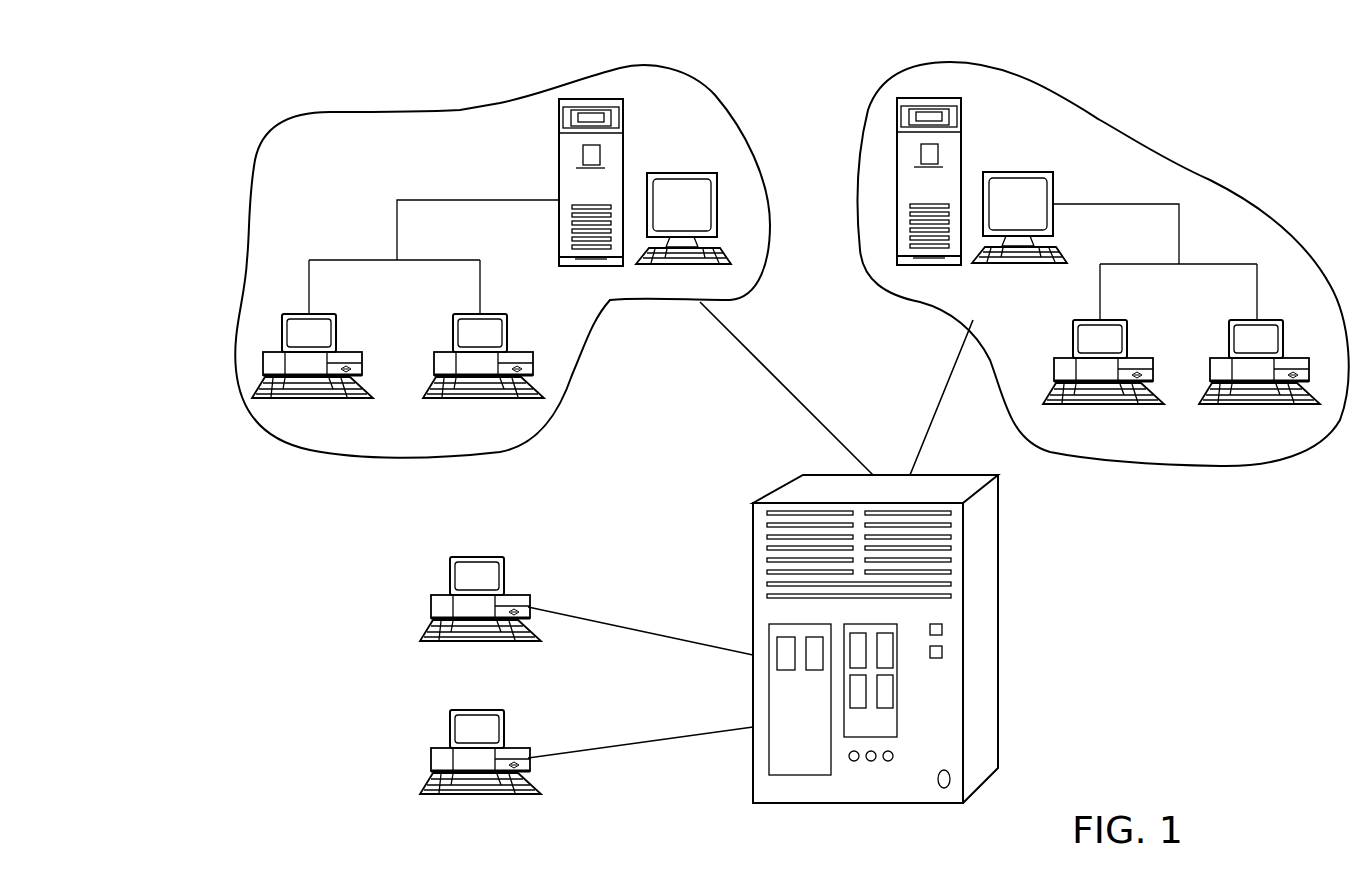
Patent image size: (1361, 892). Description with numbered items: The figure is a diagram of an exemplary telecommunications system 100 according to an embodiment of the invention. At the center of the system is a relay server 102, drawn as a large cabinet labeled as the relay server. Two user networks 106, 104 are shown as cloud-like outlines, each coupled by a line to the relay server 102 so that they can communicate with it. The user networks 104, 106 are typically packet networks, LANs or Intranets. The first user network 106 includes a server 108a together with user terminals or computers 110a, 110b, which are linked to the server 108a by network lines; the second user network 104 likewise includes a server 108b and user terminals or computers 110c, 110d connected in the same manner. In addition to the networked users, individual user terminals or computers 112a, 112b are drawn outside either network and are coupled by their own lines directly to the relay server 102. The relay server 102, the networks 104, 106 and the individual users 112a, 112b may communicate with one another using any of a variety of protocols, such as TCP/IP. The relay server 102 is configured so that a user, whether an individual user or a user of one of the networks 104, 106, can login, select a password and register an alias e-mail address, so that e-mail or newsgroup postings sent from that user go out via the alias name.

The telecommunications system 100 is at (1250, 52).
The relay server 102 is at (998, 567).
The user network 104 is at (1155, 162).
The user network 106 is at (460, 108).
The server 108a is at (680, 172).
The server 108b is at (962, 143).
The user terminal or computer 110a is at (303, 400).
The user terminal or computer 110b is at (470, 400).
The user terminal or computer 110c is at (1130, 338).
The user terminal or computer 110d is at (1285, 338).
The individual user terminal or computer 112a is at (449, 574).
The individual user terminal or computer 112b is at (449, 718).